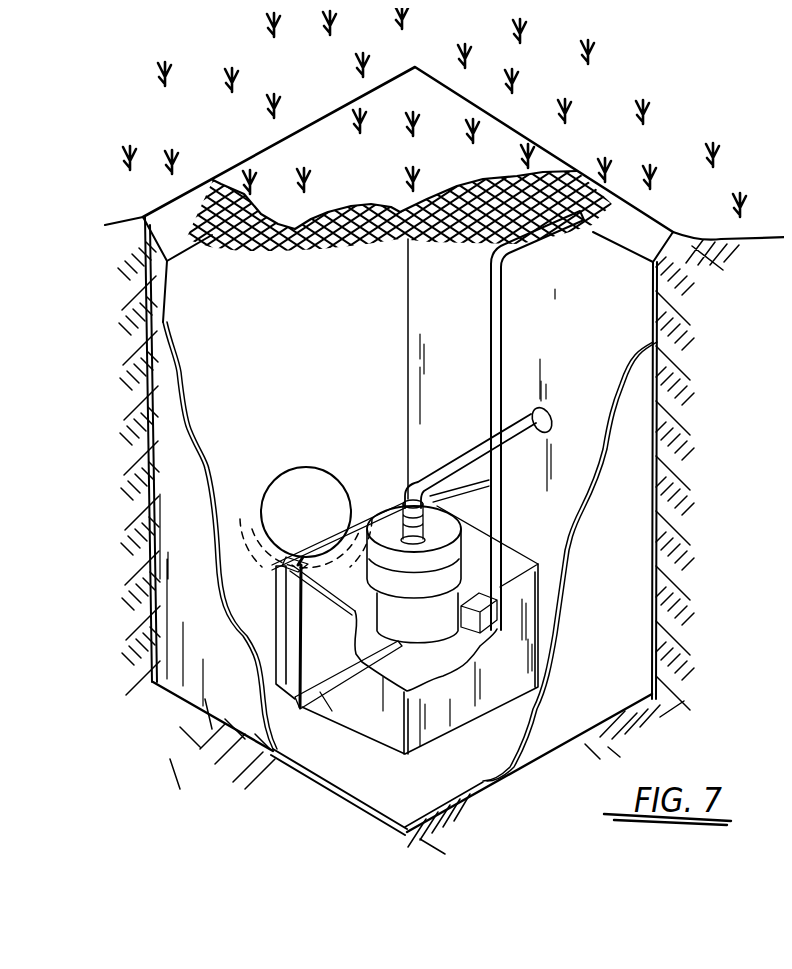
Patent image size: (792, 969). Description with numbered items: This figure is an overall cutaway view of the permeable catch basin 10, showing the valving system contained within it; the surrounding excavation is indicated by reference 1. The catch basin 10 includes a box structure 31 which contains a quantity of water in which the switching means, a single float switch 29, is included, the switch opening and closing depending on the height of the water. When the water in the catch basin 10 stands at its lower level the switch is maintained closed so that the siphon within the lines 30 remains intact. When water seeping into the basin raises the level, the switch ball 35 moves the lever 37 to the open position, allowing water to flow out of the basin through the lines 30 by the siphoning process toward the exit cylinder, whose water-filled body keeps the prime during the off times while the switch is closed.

The pit wall 1 is at (640, 560).
The catch basin 10 is at (188, 695).
The float switch 29 is at (396, 528).
The lines 30 is at (503, 319).
The box structure 31 is at (462, 714).
The switch ball 35 is at (306, 488).
The lever 37 is at (331, 690).